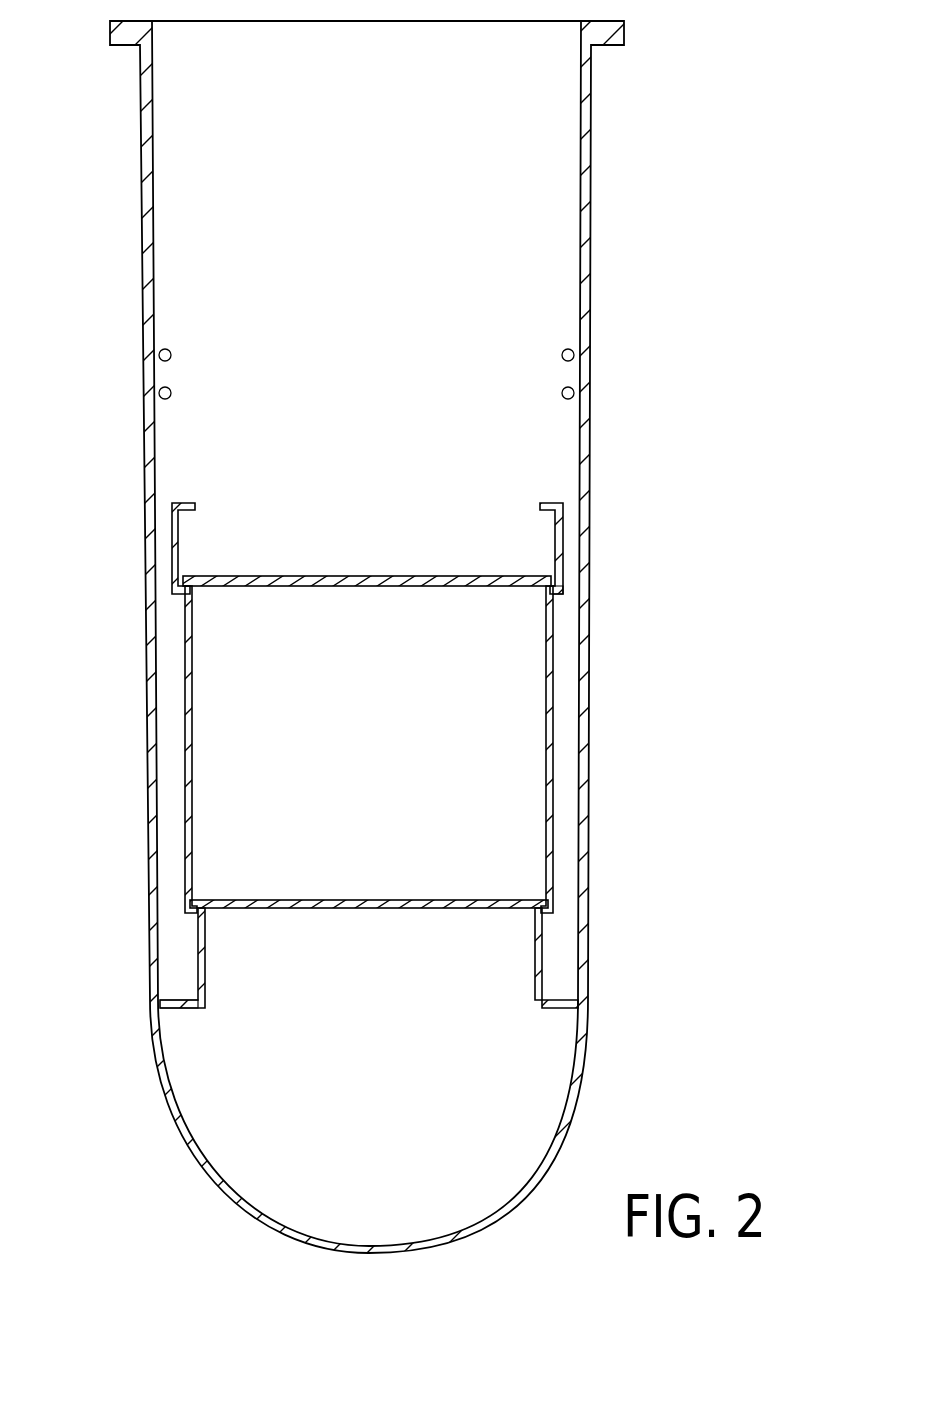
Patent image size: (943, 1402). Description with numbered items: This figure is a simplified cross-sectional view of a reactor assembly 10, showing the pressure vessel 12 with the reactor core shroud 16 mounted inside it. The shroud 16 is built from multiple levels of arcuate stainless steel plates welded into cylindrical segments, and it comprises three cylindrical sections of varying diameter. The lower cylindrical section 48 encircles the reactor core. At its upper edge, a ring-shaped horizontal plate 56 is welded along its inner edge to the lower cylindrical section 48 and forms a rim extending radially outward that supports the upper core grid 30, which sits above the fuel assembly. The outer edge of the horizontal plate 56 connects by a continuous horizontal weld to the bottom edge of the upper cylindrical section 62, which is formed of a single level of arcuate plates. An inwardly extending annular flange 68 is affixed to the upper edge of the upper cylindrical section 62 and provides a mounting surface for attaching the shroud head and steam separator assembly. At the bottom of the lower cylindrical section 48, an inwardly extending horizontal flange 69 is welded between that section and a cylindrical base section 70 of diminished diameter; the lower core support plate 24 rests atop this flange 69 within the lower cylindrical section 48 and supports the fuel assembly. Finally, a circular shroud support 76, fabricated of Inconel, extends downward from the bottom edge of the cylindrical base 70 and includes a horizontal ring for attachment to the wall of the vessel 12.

The reactor assembly 10 is at (378, 637).
The pressure vessel 12 is at (592, 330).
The reactor core shroud 16 is at (360, 780).
The lower reactor core support plate 24 is at (272, 908).
The upper core grid 30 is at (247, 586).
The lower cylindrical section 48 is at (554, 783).
The horizontal plate 56 is at (566, 600).
The upper cylindrical section 62 is at (172, 542).
The inwardly extending annular flange 68 is at (556, 502).
The inwardly extending horizontal flange 69 is at (196, 918).
The cylindrical base section 70 is at (546, 950).
The circular shroud support 76 is at (178, 1015).